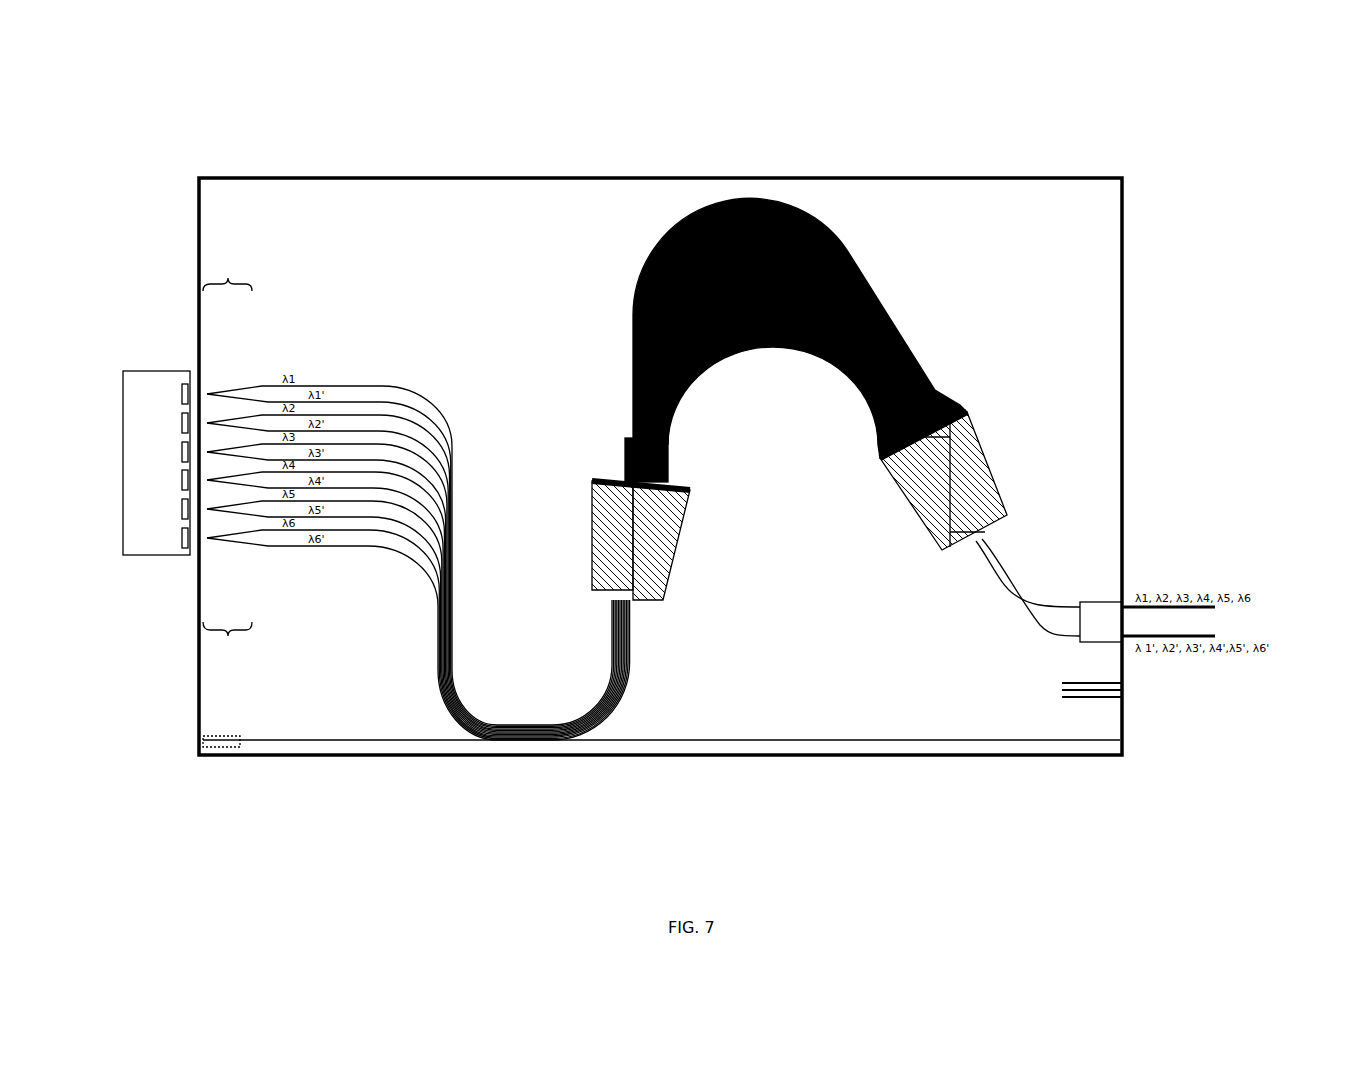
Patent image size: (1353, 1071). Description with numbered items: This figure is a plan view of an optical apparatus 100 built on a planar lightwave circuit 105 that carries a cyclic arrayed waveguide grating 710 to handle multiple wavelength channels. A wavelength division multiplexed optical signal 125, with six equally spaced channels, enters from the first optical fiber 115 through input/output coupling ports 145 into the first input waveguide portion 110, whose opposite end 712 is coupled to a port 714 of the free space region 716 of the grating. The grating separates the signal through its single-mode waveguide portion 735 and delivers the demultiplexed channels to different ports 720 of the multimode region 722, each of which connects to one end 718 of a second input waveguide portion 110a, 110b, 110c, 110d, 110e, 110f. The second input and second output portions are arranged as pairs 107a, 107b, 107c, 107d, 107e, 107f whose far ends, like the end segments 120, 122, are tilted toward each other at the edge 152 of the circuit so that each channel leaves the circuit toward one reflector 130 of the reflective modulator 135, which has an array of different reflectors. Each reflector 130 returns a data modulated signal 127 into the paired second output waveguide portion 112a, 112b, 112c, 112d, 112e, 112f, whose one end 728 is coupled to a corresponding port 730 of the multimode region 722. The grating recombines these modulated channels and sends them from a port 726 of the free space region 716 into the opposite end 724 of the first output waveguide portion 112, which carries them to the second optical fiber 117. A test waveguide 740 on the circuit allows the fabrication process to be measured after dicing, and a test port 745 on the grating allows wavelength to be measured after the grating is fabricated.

The optical apparatus 100 is at (148, 121).
The planar lightwave circuit 105 is at (996, 254).
The paired input and output waveguide second portions 107a is at (561, 313).
The paired input and output waveguide second portions 107b is at (573, 366).
The paired input and output waveguide second portions 107c is at (561, 408).
The paired input and output waveguide second portions 107d is at (551, 446).
The paired input and output waveguide second portions 107e is at (516, 515).
The paired input and output waveguide second portions 107f is at (521, 554).
The first input waveguide portion 110 is at (1017, 597).
The second input waveguide portion 110a is at (381, 387).
The second input waveguide portion 110b is at (420, 430).
The second input waveguide portion 110c is at (428, 462).
The second input waveguide portion 110d is at (433, 498).
The second input waveguide portion 110e is at (437, 528).
The second input waveguide portion 110f is at (450, 555).
The first output waveguide portion 112 is at (1023, 623).
The second output waveguide portion 112a is at (408, 403).
The second output waveguide portion 112b is at (425, 446).
The second output waveguide portion 112c is at (437, 472).
The second output waveguide portion 112d is at (440, 505).
The second output waveguide portion 112e is at (445, 527).
The second output waveguide portion 112f is at (453, 583).
The first optical fiber 115 is at (1215, 607).
The second optical fiber 117 is at (1188, 635).
The end segment of the input planar waveguide 120 is at (228, 278).
The end segment of the output planar waveguide 122 is at (228, 636).
The optical signal 125 is at (298, 362).
The data modulated optical signal 127 is at (337, 372).
The reflector 130 is at (183, 390).
The reflective modulator 135 is at (158, 549).
The input/output coupling ports 145 is at (1102, 599).
The edge of the circuit 152 is at (200, 222).
The cyclic arrayed waveguide grating 710 is at (741, 386).
The opposite end of the first input waveguide portion 712 is at (989, 506).
The port of the free space region 714 is at (989, 543).
The free space region 716 is at (989, 457).
The one end of the second input waveguide portion 718 is at (642, 568).
The port of the multimode region 720 is at (642, 609).
The multimode region 722 is at (699, 530).
The opposite end of the first output waveguide portion 724 is at (953, 558).
The port of the free space region 726 is at (974, 549).
The one end of the second output waveguide portion 728 is at (602, 605).
The port of the multimode region 730 is at (616, 609).
The single-mode waveguide portion 735 is at (789, 380).
The test waveguide 740 is at (1107, 700).
The test port 745 is at (218, 757).